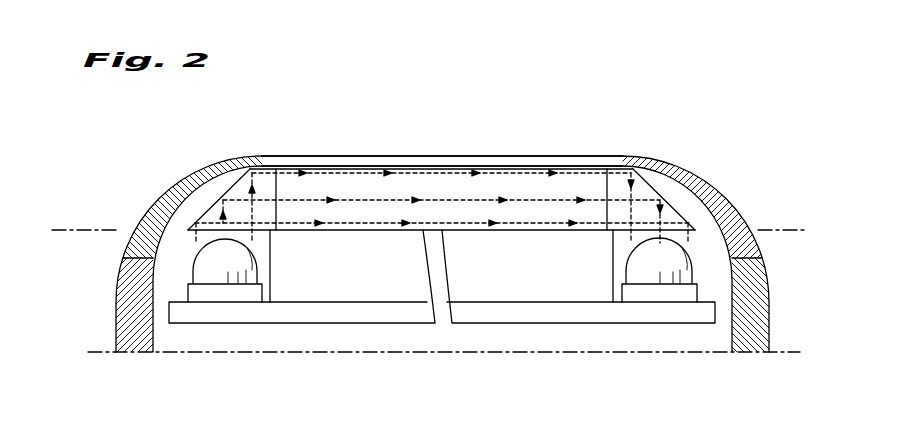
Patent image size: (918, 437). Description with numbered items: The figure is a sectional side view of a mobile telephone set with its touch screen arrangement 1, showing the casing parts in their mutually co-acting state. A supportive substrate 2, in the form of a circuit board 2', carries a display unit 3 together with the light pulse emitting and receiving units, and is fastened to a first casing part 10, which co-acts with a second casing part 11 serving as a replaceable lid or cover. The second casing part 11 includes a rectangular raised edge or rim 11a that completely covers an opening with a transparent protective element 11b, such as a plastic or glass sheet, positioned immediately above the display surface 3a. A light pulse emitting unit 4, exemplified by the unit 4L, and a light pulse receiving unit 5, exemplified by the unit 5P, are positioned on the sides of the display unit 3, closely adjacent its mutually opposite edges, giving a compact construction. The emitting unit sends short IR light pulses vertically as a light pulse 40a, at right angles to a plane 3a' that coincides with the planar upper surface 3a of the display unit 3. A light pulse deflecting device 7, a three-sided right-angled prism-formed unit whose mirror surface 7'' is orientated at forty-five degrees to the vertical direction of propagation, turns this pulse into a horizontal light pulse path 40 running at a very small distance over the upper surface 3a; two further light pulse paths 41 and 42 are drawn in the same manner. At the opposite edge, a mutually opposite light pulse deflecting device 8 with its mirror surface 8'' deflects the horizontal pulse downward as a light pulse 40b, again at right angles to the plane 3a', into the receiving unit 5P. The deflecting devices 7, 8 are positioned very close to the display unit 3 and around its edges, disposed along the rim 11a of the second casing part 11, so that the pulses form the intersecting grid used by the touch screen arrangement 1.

The touch screen arrangement 1 is at (450, 143).
The substrate 2 is at (578, 316).
The circuit board 2' is at (300, 330).
The display unit 3 is at (568, 273).
The upper surface of the display unit 3a is at (441, 324).
The plane 3a' is at (420, 254).
The light pulse emitting unit 4 is at (193, 252).
The light pulse emitting unit 4L is at (247, 261).
The light pulse receiving unit 5 is at (688, 256).
The light pulse receiving unit 5P is at (643, 261).
The light pulse deflecting device 7 is at (286, 159).
The mirror surface 7'' is at (208, 161).
The light pulse deflecting device 8 is at (567, 147).
The mirror surface 8'' is at (695, 180).
The first casing part 10 is at (120, 313).
The second casing part 11 is at (178, 200).
The rim 11a is at (640, 157).
The transparent protective element 11b is at (597, 165).
The light pulse path 40 is at (353, 200).
The light pulse 40a is at (195, 224).
The light pulse 40b is at (697, 246).
The light pulse path 41 is at (362, 168).
The light pulse path 42 is at (370, 225).